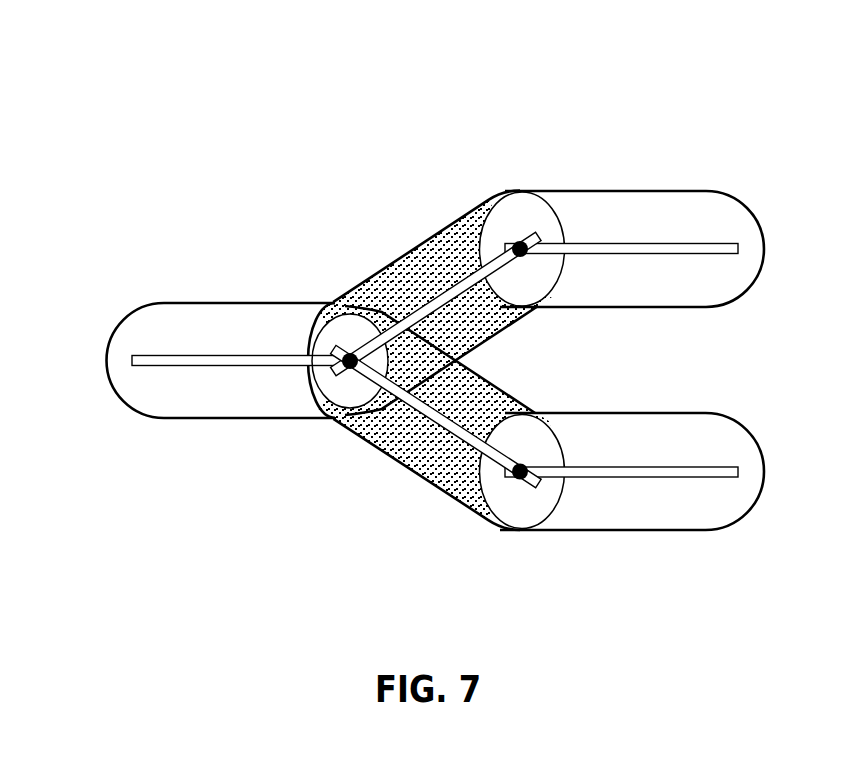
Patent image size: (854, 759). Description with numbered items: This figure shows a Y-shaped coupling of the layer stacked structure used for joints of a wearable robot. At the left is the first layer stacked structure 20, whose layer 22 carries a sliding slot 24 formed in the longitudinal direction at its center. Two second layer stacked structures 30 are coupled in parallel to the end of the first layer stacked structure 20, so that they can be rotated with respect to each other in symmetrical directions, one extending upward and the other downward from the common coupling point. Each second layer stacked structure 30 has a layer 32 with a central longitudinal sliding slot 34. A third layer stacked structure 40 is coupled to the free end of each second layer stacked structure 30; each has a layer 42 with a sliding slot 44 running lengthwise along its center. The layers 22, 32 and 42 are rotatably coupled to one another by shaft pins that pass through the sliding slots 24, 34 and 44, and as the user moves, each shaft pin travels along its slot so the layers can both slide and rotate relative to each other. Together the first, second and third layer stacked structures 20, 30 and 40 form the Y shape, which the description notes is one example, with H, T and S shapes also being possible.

The first layer stacked structure 20 is at (233, 335).
The layer 22 is at (272, 302).
The sliding slot 24 is at (187, 368).
The second layer stacked structure 30 is at (427, 379).
The layer 32 is at (460, 222).
The sliding slot 34 is at (413, 310).
The third layer stacked structure 40 is at (622, 355).
The layer 42 is at (562, 190).
The sliding slot 44 is at (696, 242).